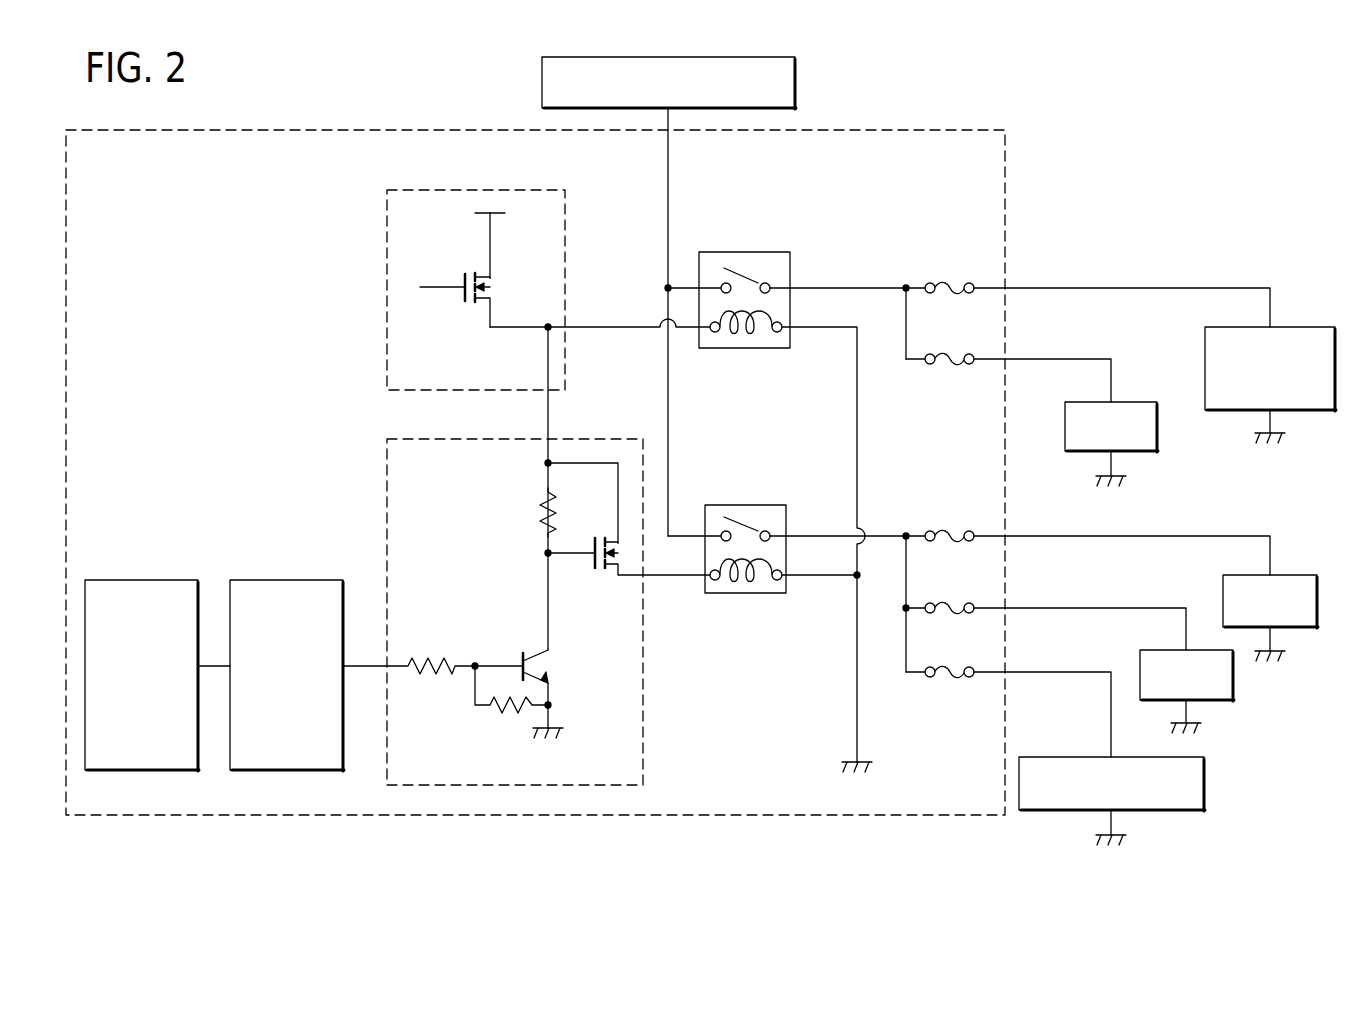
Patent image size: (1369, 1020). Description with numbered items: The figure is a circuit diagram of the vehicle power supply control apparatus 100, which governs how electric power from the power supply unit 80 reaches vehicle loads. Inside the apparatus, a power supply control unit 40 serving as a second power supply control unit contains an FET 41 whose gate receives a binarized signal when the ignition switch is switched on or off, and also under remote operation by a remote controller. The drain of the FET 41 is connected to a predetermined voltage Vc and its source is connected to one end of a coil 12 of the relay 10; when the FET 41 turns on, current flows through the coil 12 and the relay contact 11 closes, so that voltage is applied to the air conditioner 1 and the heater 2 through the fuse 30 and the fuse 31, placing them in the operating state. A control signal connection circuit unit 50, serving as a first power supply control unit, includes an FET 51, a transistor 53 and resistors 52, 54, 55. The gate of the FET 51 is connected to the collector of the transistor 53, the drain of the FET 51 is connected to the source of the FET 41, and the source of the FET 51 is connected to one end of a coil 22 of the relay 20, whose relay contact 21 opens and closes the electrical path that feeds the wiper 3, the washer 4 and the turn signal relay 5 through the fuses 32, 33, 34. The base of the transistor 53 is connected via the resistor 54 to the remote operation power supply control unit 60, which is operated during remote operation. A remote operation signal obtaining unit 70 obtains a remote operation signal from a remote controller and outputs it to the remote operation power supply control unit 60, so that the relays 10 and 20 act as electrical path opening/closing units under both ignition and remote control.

The vehicle power supply control apparatus 100 is at (535, 472).
The power supply unit 80 is at (669, 296).
The power supply control unit 40 is at (535, 190).
The FET 41 is at (490, 291).
The control signal connection circuit unit 50 is at (590, 439).
The FET 51 is at (600, 570).
The resistor 52 is at (540, 511).
The transistor 53 is at (540, 677).
The resistor 54 is at (430, 651).
The resistor 55 is at (505, 717).
The relay 10 is at (772, 305).
The relay contact 11 is at (757, 275).
The coil 12 is at (750, 335).
The relay 20 is at (752, 555).
The relay contact 21 is at (752, 526).
The coil 22 is at (750, 583).
The fuse 30 is at (955, 281).
The fuse 31 is at (955, 352).
The fuse 32 is at (955, 529).
The fuse 33 is at (955, 601).
The fuse 34 is at (955, 665).
The air conditioner control unit 1 is at (1155, 365).
The heater 2 is at (1066, 422).
The wiper 3 is at (1146, 598).
The washer 4 is at (1104, 670).
The turn signal relay 5 is at (1089, 758).
The remote operation power supply control unit 60 is at (287, 675).
The remote operation signal obtaining unit 70 is at (157, 675).